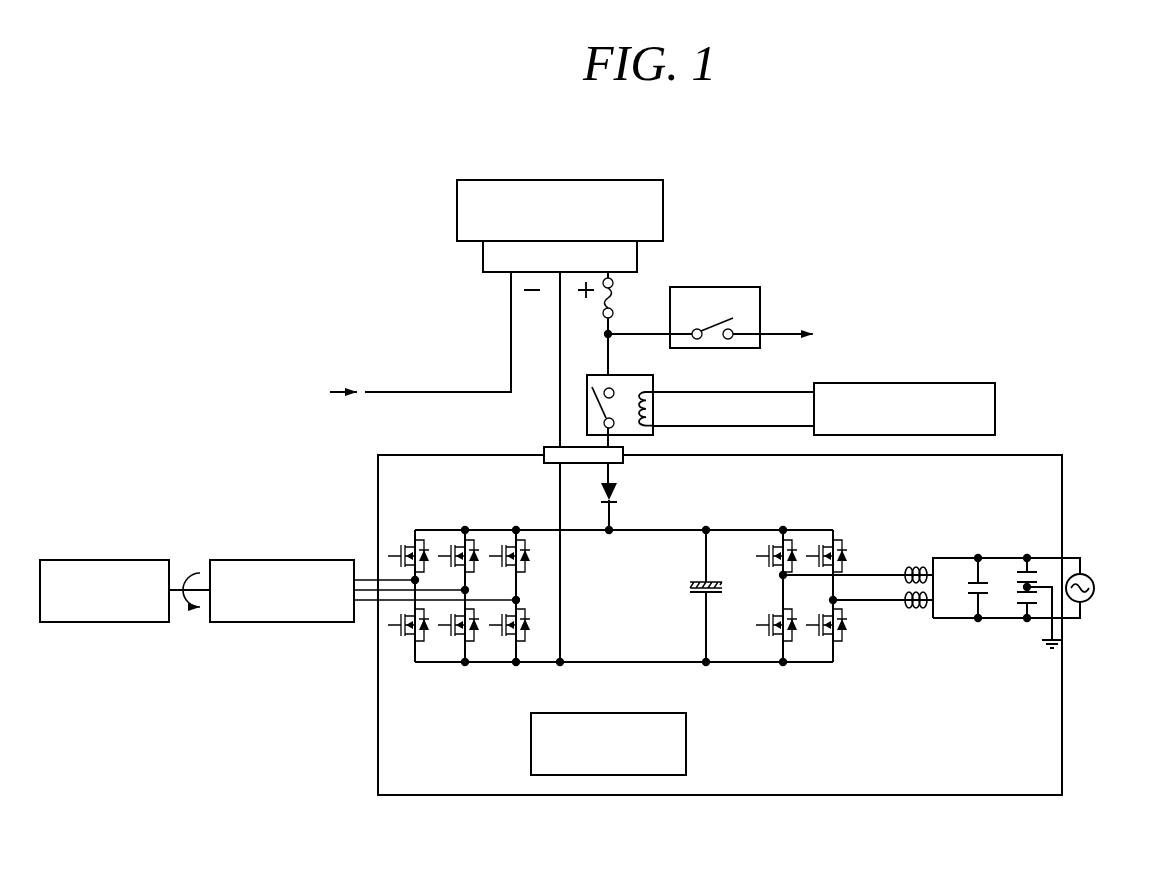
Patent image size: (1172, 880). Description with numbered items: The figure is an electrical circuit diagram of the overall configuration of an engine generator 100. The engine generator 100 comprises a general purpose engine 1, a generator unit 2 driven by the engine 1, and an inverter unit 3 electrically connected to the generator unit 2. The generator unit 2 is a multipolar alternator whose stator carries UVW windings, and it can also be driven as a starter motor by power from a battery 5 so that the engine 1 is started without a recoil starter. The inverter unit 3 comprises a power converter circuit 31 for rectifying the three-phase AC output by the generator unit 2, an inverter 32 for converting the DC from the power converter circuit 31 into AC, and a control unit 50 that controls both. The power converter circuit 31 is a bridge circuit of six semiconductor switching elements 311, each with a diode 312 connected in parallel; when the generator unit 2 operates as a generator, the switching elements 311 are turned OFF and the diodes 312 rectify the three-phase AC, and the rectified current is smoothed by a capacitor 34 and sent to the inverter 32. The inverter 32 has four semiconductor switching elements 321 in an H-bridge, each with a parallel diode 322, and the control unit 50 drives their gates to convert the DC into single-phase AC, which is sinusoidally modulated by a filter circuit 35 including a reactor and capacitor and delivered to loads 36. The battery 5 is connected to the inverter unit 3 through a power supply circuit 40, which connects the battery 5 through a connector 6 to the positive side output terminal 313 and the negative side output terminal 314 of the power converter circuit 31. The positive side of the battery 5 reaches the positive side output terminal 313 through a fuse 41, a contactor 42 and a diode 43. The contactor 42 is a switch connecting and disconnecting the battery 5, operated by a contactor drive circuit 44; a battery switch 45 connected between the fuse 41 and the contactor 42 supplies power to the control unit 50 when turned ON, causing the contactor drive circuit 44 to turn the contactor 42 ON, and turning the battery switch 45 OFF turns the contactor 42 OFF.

The engine generator 100 is at (905, 230).
The general purpose engine 1 is at (144, 560).
The generator unit 2 is at (333, 560).
The inverter unit 3 is at (942, 795).
The battery 5 is at (663, 201).
The connector 6 is at (483, 257).
The power converter circuit 31 is at (457, 635).
The semiconductor switching element 311 is at (401, 657).
The diode 312 is at (420, 645).
The positive side output terminal 313 is at (609, 533).
The negative side output terminal 314 is at (563, 659).
The inverter 32 is at (816, 635).
The semiconductor switching element 321 is at (777, 640).
The diode 322 is at (793, 642).
The capacitor 34 is at (697, 591).
The filter circuit 35 is at (1008, 684).
The load 36 is at (1094, 582).
The power supply circuit 40 is at (537, 347).
The fuse 41 is at (613, 297).
The contactor 42 is at (587, 407).
The diode 43 is at (617, 498).
The contactor drive circuit 44 is at (995, 403).
The battery switch 45 is at (750, 287).
The control unit 50 is at (686, 737).